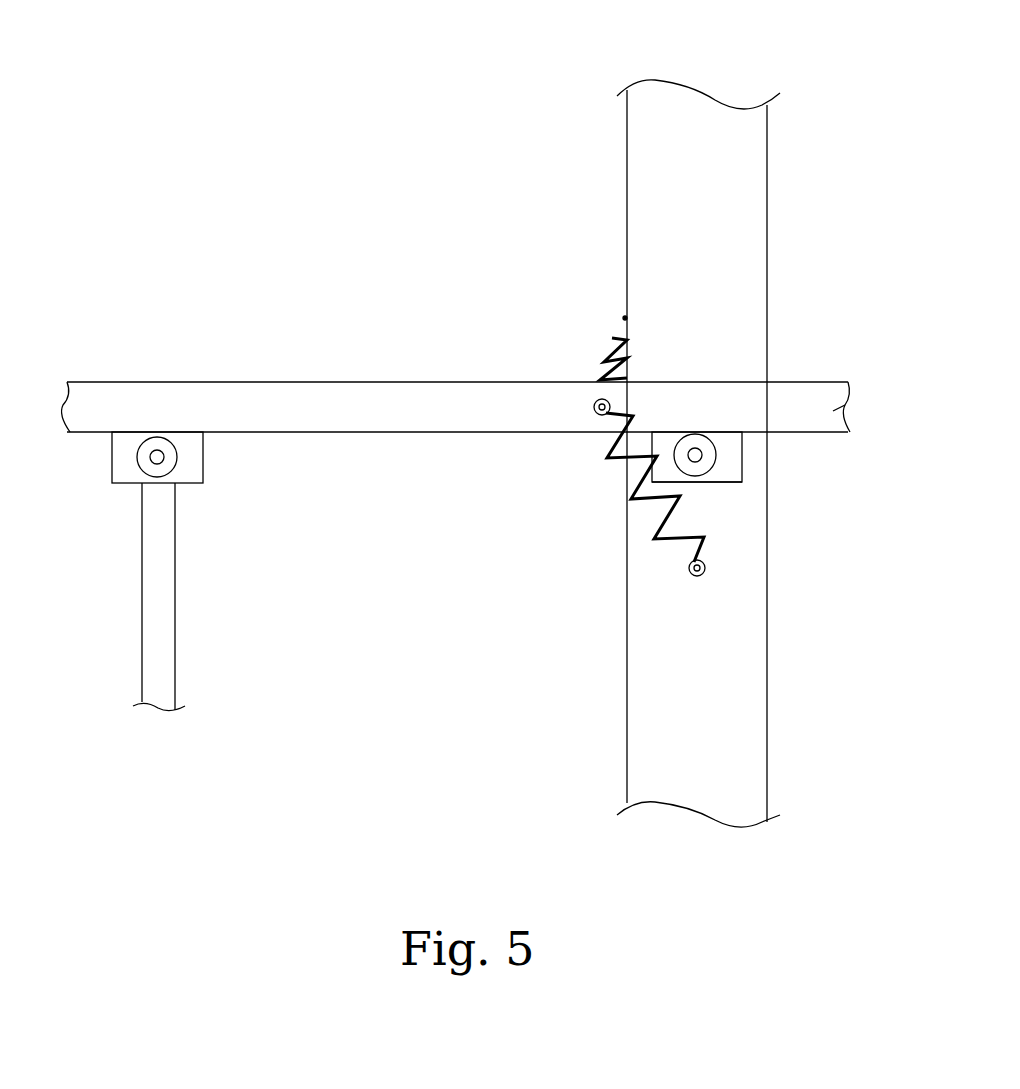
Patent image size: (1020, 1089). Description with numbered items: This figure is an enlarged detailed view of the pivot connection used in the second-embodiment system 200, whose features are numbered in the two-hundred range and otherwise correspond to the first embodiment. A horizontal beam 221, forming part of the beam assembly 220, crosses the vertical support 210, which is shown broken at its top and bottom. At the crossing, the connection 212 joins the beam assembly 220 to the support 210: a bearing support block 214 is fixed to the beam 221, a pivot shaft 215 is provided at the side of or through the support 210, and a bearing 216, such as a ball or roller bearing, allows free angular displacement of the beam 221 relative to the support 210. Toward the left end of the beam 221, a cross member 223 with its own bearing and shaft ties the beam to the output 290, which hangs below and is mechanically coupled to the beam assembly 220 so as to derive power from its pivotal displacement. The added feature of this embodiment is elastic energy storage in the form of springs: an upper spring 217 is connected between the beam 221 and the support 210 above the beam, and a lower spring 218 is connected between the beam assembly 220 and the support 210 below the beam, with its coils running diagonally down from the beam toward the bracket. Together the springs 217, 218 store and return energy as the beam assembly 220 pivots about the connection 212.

The alternative system 200 is at (395, 84).
The support 210 is at (627, 143).
The connection 212 is at (752, 490).
The bearing support block 214 is at (727, 487).
The pivot shaft 215 is at (716, 457).
The bearing 216 is at (702, 452).
The upper spring 217 is at (612, 339).
The lower spring 218 is at (612, 470).
The beam assembly 220 is at (378, 468).
The beam 221 is at (341, 382).
The cross member 223 is at (112, 462).
The output 290 is at (112, 608).